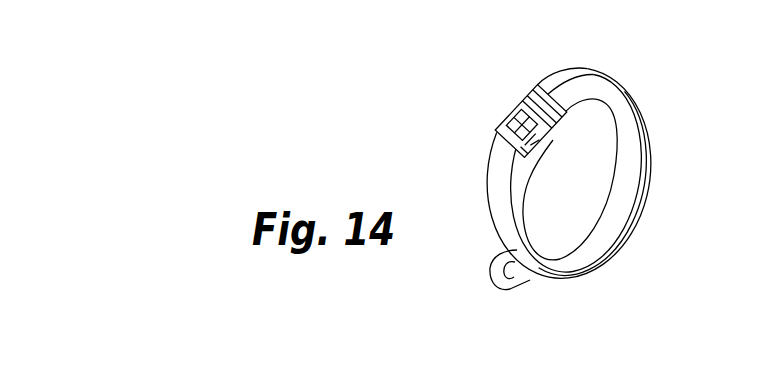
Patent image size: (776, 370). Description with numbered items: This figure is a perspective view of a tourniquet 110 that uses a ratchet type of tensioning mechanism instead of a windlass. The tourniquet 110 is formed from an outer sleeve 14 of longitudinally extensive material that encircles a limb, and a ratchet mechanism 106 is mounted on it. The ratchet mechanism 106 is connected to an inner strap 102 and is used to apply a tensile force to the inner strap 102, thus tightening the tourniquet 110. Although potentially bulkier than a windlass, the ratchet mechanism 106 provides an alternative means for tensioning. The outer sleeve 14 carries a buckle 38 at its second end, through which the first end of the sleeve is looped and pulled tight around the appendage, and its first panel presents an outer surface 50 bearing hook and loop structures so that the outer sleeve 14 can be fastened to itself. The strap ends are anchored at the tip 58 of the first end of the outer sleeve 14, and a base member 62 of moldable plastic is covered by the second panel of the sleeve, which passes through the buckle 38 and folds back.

The outer sleeve 14 is at (652, 187).
The buckle 38 is at (603, 104).
The outer surface 50 is at (509, 292).
The tip 58 is at (500, 284).
The base member 62 is at (557, 132).
The inner strap 102 is at (506, 133).
The ratchet mechanism 106 is at (496, 108).
The tourniquet 110 is at (666, 96).